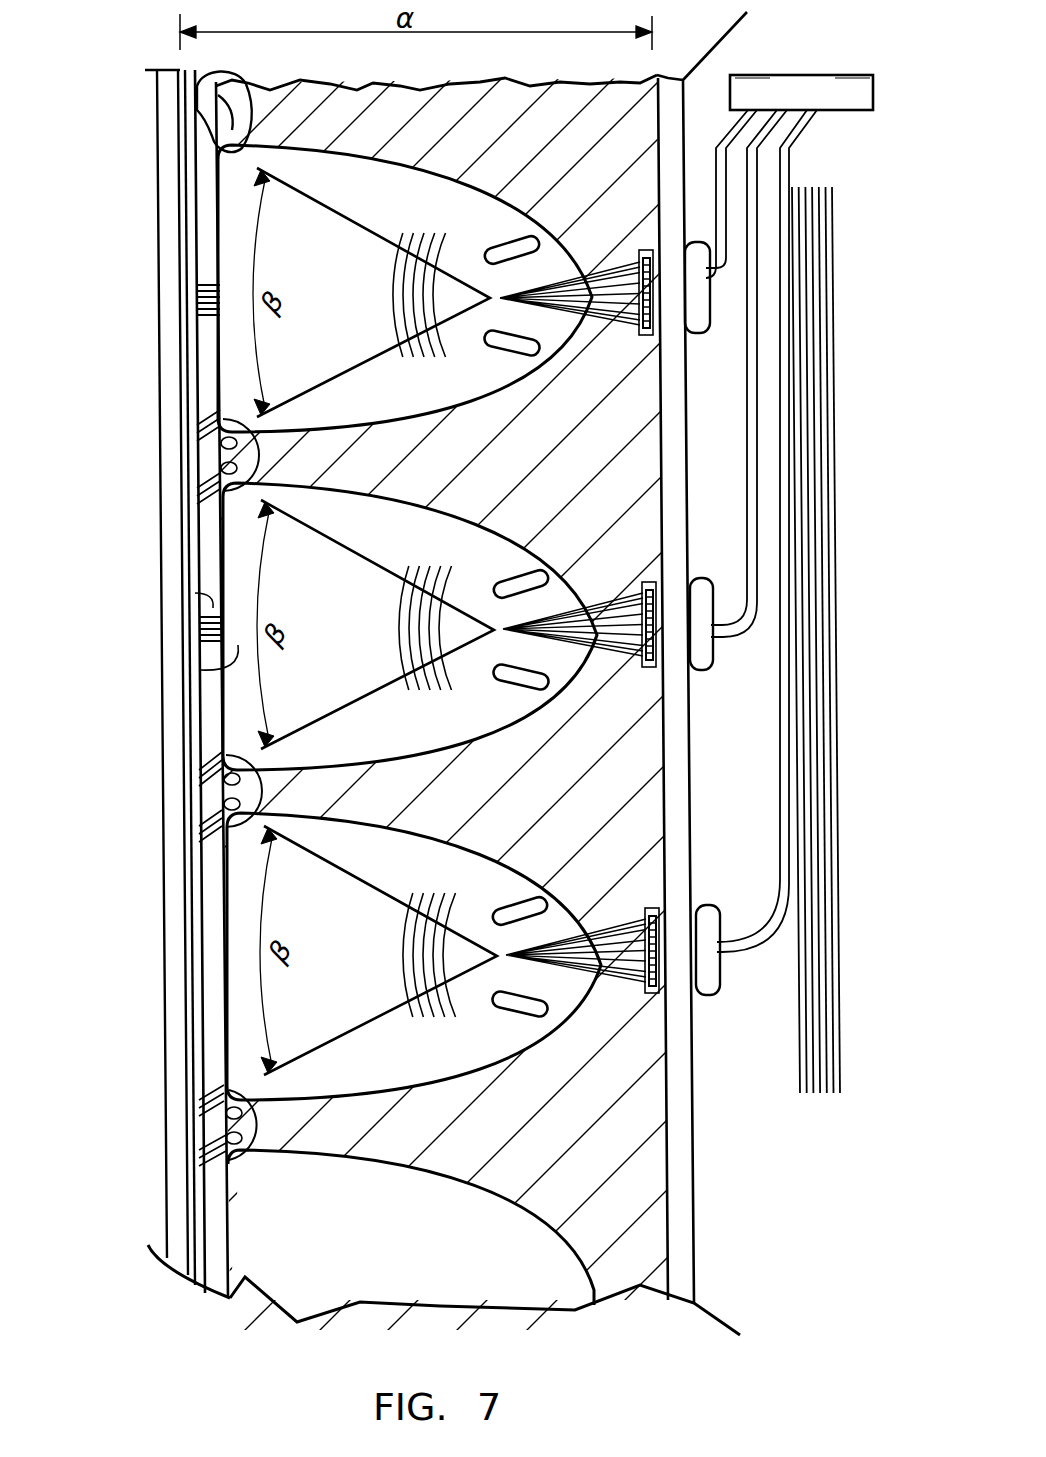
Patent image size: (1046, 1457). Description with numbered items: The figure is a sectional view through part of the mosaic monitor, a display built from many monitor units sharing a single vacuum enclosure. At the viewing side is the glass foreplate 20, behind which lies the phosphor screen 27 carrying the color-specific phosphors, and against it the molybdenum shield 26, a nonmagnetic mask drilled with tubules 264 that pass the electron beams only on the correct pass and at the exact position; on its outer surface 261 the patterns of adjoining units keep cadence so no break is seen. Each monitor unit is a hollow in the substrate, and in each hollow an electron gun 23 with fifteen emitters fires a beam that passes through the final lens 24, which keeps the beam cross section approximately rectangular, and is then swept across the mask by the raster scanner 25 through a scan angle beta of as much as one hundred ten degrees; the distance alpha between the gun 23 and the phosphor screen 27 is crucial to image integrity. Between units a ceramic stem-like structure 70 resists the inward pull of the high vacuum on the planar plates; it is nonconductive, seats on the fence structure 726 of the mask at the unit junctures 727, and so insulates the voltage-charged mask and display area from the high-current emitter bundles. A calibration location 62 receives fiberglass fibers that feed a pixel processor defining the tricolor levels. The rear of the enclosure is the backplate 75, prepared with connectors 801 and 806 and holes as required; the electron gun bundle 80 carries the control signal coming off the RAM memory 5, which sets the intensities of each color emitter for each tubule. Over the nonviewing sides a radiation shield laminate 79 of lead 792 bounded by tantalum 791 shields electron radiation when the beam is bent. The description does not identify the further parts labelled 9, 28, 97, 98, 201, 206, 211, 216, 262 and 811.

The RAM memory 5 is at (842, 97).
The cable bundle 9 is at (859, 640).
The glass foreplate 20 is at (165, 192).
The electron gun 23 is at (645, 252).
The final lens 24 is at (512, 244).
The raster scanner 25 is at (414, 236).
The molybdenum shield 26 is at (207, 85).
The phosphor screen 27 is at (185, 158).
The electrode 28 is at (196, 342).
The calibration location 62 is at (205, 790).
The stem-like structure 70 is at (262, 440).
The backplate 75 is at (675, 522).
The radiation shield laminate 79 is at (827, 1015).
The electron gun bundle 80 is at (783, 161).
The terminal 97 is at (760, 75).
The terminal 98 is at (840, 75).
The first cavity 201 is at (240, 262).
The second cavity 206 is at (250, 718).
The third cavity 211 is at (242, 1005).
The fourth cavity 216 is at (222, 1215).
The outer surface of the molybdenum shield 261 is at (202, 635).
The groove 262 is at (216, 662).
The tubule 264 is at (216, 600).
The fence structure 726 is at (210, 452).
The unit junctures 727 is at (212, 472).
The tantalum 791 is at (822, 1050).
The lead 792 is at (817, 1080).
The connector 801 is at (692, 322).
The connector 806 is at (697, 658).
The contact tab 811 is at (708, 978).